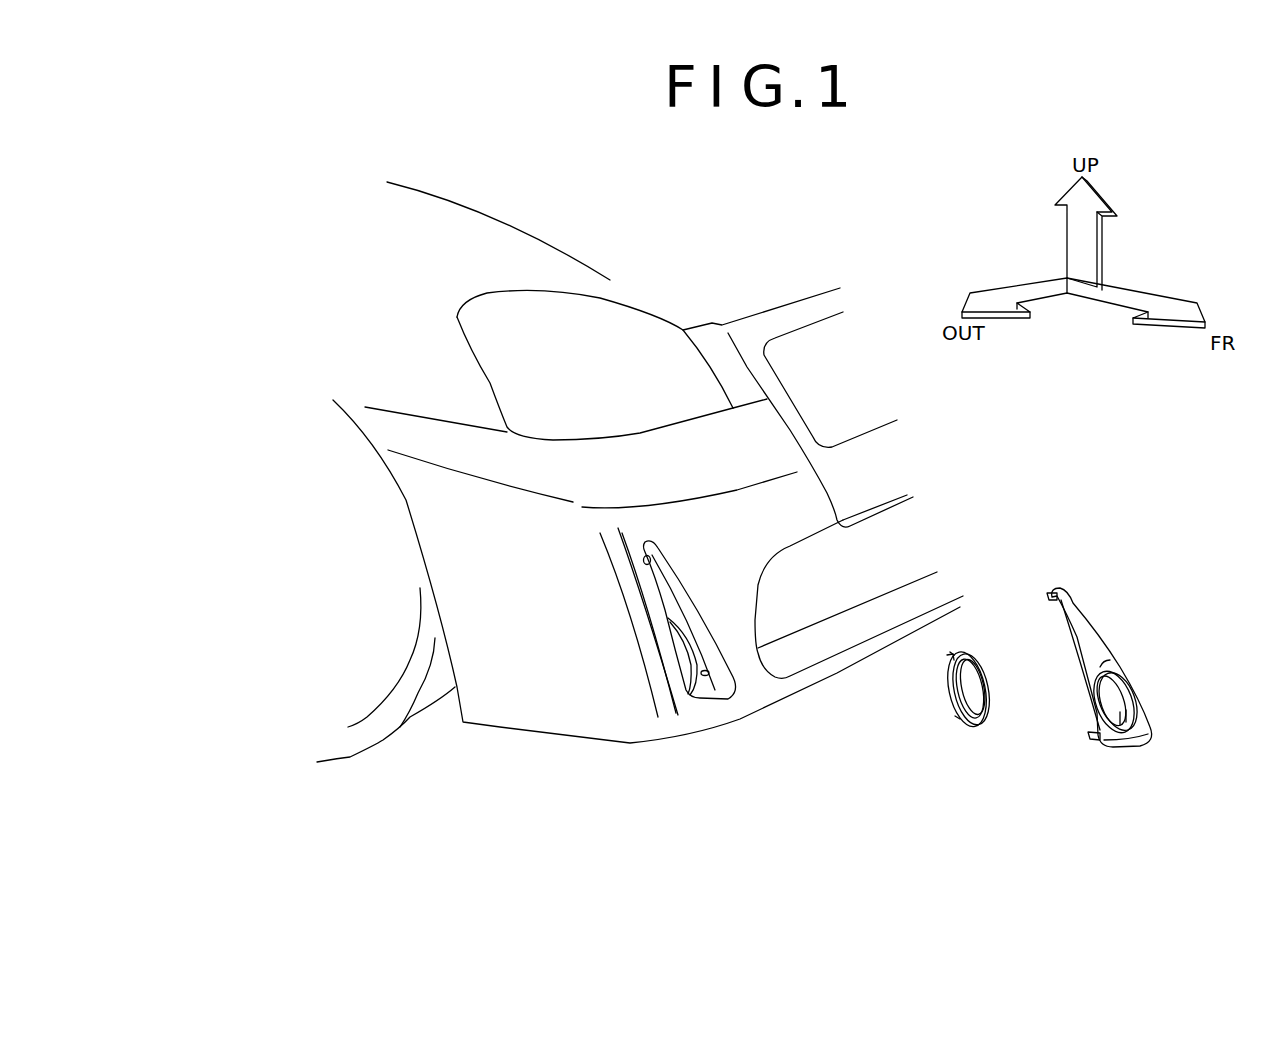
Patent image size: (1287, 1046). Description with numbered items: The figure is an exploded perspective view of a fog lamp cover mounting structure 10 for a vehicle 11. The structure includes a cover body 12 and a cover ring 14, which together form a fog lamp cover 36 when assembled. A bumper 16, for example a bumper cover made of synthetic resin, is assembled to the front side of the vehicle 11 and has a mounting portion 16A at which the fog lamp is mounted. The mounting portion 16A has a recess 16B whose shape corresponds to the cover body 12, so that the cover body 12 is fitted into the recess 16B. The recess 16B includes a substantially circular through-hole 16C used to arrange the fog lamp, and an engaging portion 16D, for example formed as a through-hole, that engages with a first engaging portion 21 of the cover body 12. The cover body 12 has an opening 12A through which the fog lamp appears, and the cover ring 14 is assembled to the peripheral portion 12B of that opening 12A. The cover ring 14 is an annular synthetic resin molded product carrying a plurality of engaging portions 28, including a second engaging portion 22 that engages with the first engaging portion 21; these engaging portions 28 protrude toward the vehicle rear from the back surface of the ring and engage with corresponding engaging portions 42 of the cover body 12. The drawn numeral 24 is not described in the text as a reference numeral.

The fog lamp cover mounting structure 10 is at (1035, 430).
The vehicle 11 is at (697, 253).
The cover body 12 is at (1095, 620).
The opening 12A is at (1132, 697).
The peripheral portion 12B is at (1117, 682).
The cover ring 14 is at (983, 668).
The bumper 16 is at (837, 675).
The mounting portion 16A is at (757, 620).
The recess 16B is at (667, 588).
The through-hole 16C is at (683, 647).
The engaging portion 16D is at (652, 552).
The first engaging portion 21 is at (1098, 741).
The second engaging portion 22 is at (958, 717).
The engaging claw 24 is at (1047, 593).
The engaging portions 28 is at (952, 655).
The fog lamp cover 36 is at (1090, 575).
The engaging portions 42 is at (1100, 667).